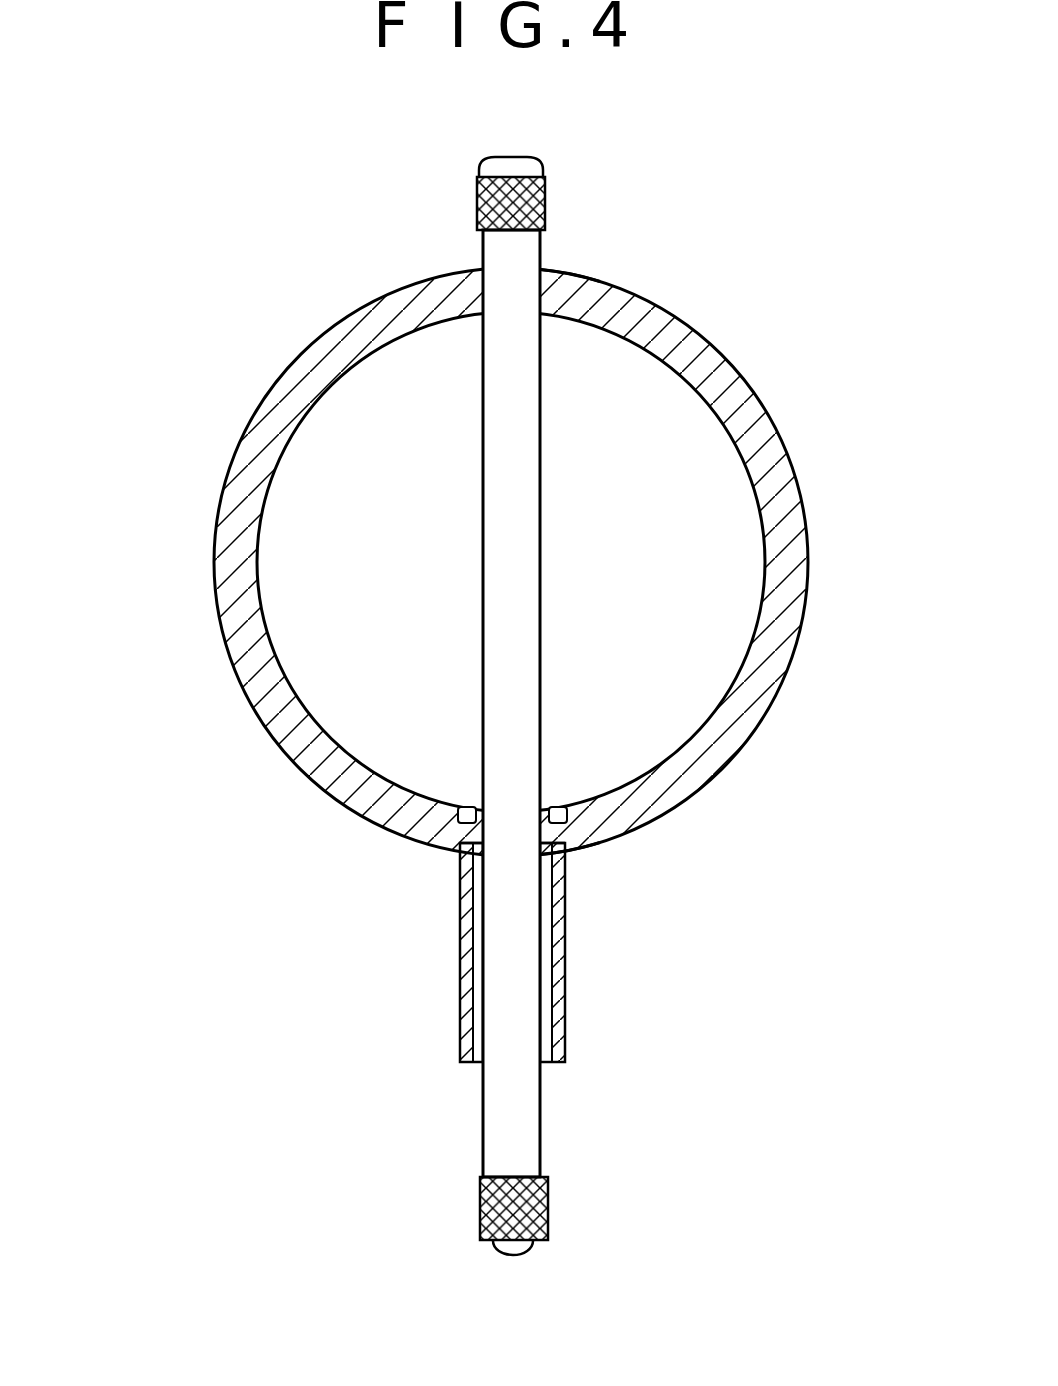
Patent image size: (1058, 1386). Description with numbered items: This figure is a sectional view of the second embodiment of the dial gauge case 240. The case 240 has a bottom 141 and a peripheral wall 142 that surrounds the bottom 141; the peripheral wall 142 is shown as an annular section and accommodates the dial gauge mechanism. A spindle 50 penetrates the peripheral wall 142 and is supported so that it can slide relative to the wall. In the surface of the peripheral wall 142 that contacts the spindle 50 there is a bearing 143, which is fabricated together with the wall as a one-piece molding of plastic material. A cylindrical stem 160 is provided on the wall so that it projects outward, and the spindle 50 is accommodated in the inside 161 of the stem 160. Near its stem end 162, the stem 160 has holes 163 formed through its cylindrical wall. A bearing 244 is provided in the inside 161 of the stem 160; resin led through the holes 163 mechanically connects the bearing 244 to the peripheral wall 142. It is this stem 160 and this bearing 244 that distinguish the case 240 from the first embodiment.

The case 240 is at (481, 636).
The bottom 141 is at (363, 395).
The peripheral wall 142 is at (780, 466).
The bearing 143 is at (568, 290).
The spindle 50 is at (527, 430).
The stem 160 is at (558, 985).
The inside 161 is at (558, 905).
The stem end 162 is at (558, 806).
The holes 163 is at (557, 832).
The bearing 244 is at (462, 851).